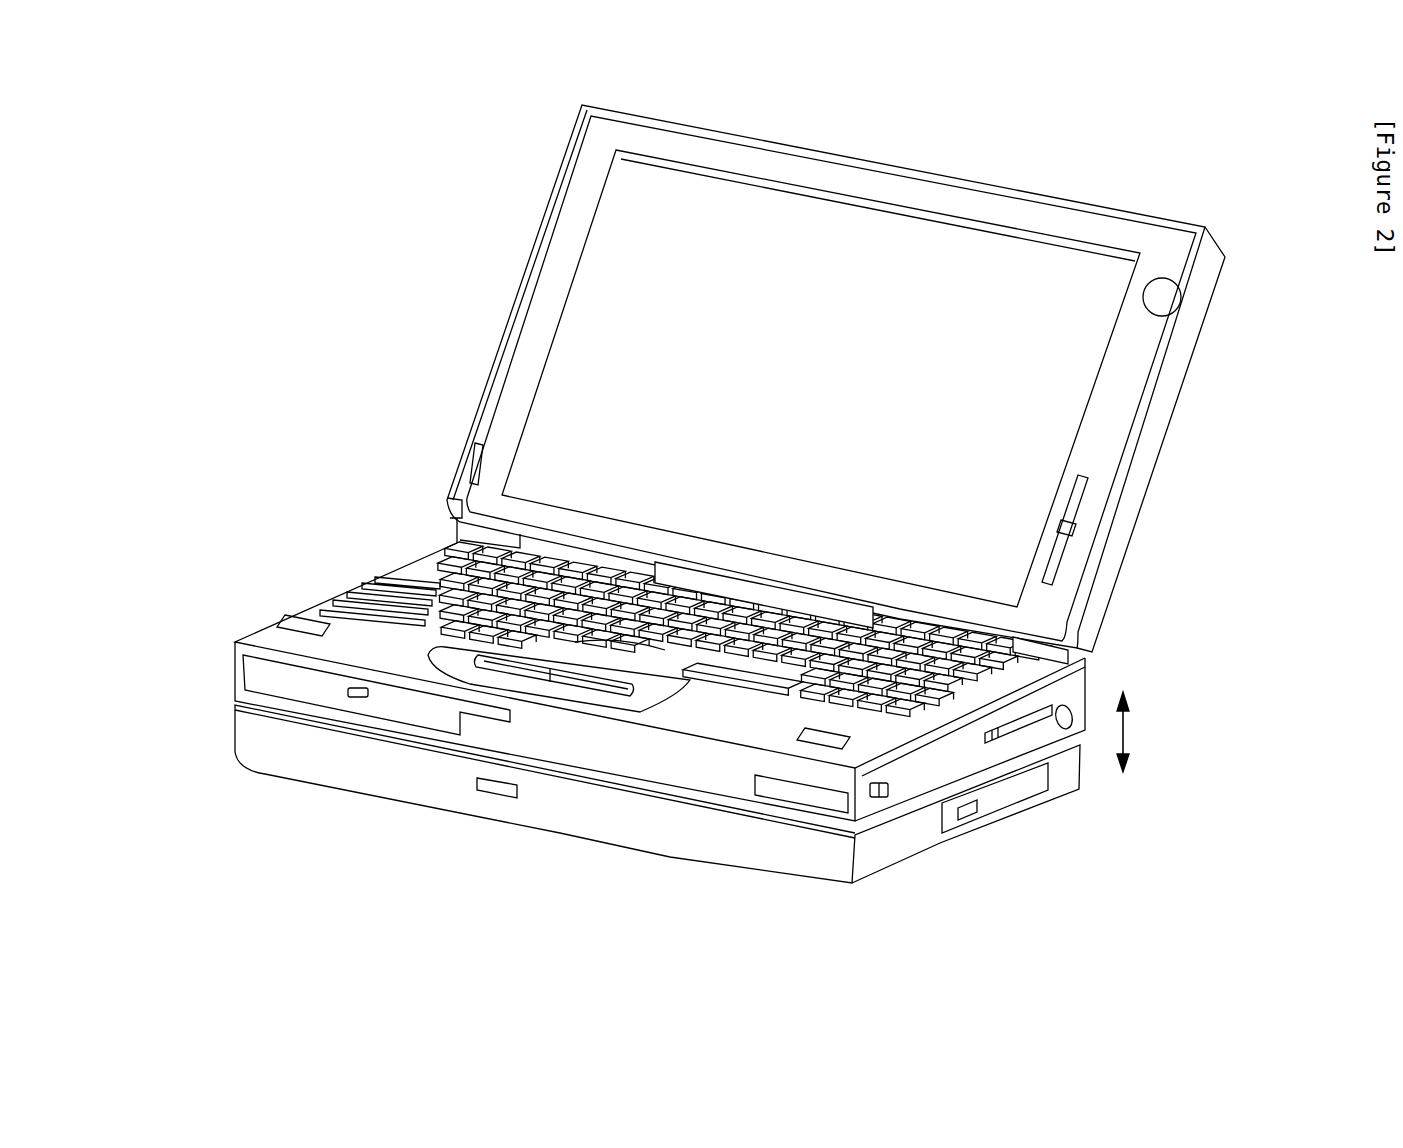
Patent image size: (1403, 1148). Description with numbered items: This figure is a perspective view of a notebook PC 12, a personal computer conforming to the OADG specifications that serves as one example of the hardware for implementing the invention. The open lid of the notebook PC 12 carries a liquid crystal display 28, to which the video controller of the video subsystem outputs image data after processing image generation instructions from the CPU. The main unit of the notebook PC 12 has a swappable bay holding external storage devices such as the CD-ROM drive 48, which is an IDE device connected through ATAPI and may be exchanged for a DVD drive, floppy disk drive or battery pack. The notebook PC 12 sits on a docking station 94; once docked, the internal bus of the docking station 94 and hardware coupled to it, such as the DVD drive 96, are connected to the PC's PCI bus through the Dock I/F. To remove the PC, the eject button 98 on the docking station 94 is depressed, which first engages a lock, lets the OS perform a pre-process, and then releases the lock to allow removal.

The notebook PC 12 is at (445, 196).
The liquid crystal display 28 is at (920, 238).
The CD-ROM drive 48 is at (265, 679).
The docking station 94 is at (565, 808).
The DVD drive 96 is at (1018, 788).
The eject button 98 is at (493, 790).